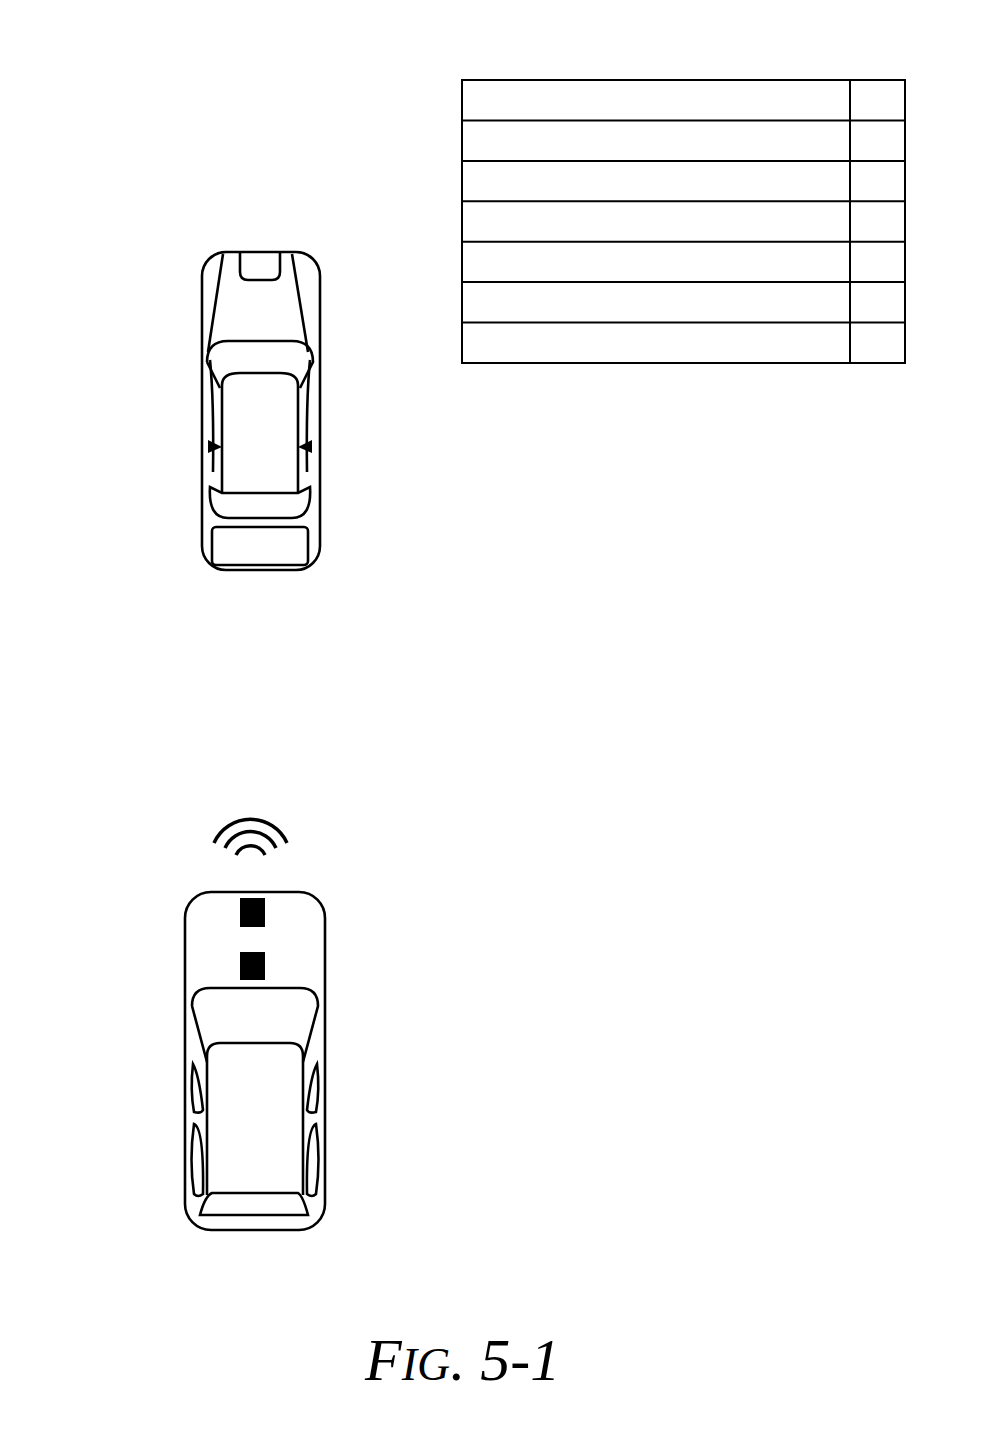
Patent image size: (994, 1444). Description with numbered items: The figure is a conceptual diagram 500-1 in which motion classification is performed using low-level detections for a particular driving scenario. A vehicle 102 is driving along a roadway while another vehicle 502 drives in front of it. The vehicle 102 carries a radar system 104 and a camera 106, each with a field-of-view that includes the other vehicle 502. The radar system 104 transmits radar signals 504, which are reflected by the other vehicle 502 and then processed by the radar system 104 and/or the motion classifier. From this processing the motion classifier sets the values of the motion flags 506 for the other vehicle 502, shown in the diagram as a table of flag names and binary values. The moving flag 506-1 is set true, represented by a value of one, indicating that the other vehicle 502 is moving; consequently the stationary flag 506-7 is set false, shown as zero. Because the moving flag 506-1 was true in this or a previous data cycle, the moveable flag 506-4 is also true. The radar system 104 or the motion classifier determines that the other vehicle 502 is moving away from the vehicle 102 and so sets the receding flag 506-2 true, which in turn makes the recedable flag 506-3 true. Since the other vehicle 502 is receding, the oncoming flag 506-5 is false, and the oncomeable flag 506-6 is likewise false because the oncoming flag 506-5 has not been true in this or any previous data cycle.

The conceptual diagram 500-1 is at (158, 75).
The motion flags 506 is at (463, 40).
The moving flag 506-1 is at (749, 112).
The receding flag 506-2 is at (757, 152).
The recedable flag 506-3 is at (761, 192).
The moveable flag 506-4 is at (759, 233).
The oncoming flag 506-5 is at (762, 274).
The oncomeable flag 506-6 is at (772, 314).
The stationary flag 506-7 is at (761, 354).
The other vehicle 502 is at (236, 569).
The radar signals 504 is at (279, 832).
The radar system 104 is at (266, 903).
The camera 106 is at (266, 968).
The vehicle 102 is at (301, 1073).